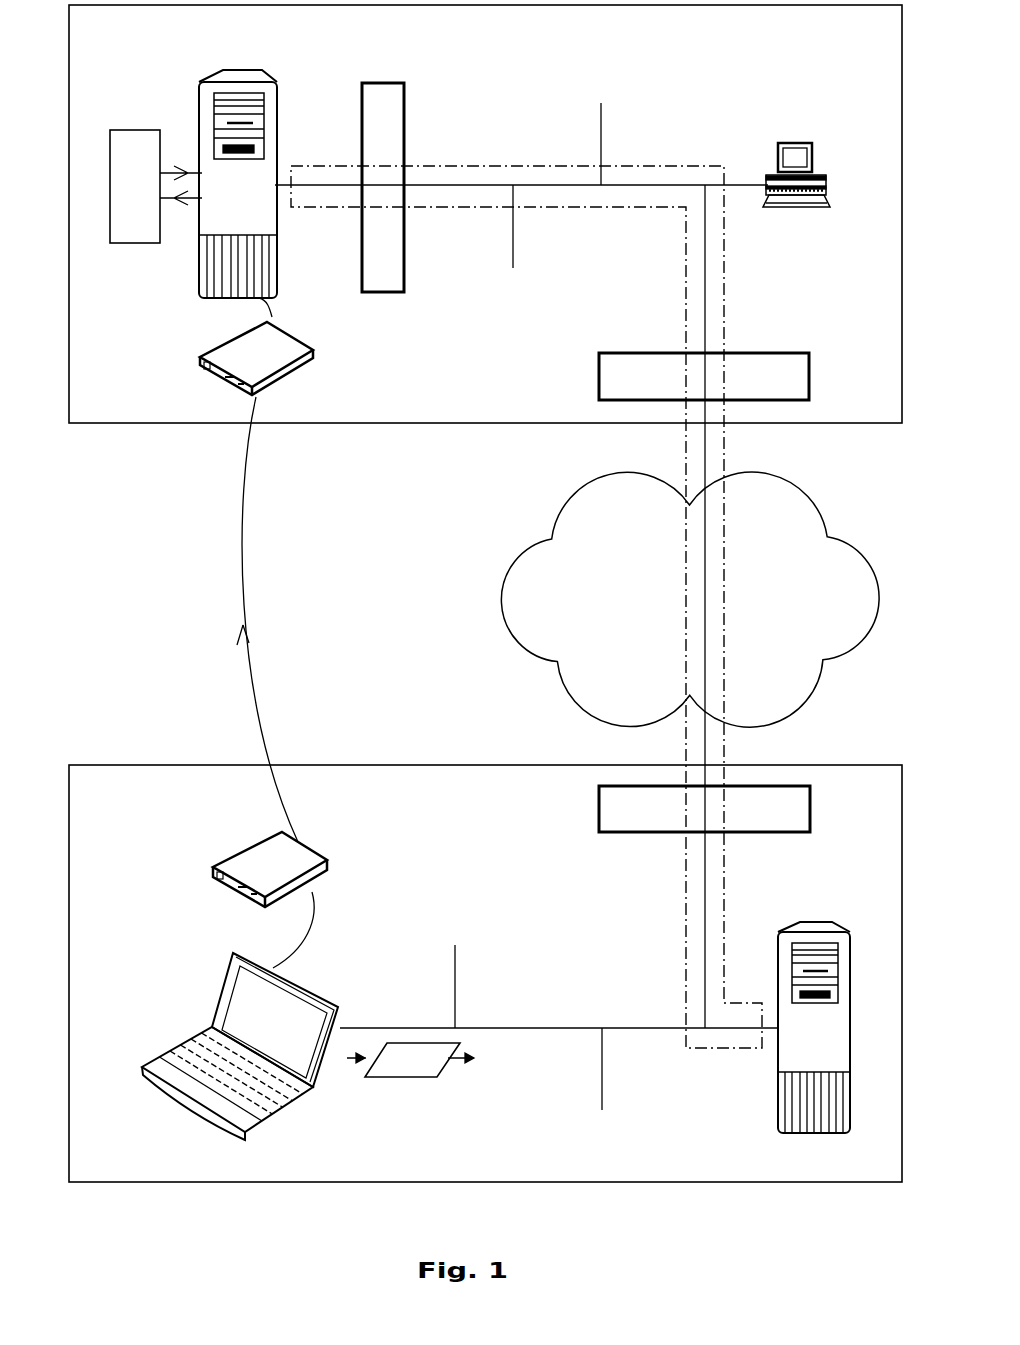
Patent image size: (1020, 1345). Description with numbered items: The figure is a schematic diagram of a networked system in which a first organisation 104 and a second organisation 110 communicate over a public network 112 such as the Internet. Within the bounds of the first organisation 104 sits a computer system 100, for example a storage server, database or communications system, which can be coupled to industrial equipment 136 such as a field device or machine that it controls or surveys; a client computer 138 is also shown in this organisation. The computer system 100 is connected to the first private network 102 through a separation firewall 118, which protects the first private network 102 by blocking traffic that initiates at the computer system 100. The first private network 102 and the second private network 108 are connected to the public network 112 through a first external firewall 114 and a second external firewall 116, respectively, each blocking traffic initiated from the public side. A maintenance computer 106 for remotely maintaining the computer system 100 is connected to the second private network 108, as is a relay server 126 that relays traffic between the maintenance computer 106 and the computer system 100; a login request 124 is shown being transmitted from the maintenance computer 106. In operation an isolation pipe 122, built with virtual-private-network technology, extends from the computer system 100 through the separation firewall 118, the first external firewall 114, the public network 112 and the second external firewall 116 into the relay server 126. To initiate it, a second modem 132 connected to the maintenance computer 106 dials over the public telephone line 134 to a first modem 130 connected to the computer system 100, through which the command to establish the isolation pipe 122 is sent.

The computer system 100 is at (232, 70).
The first private network 102 is at (601, 135).
The first organisation 104 is at (483, 423).
The maintenance computer 106 is at (192, 1048).
The second private network 108 is at (455, 985).
The second organisation 110 is at (456, 765).
The public network 112 is at (500, 600).
The first external firewall 114 is at (810, 372).
The second external firewall 116 is at (811, 800).
The separation firewall 118 is at (382, 292).
The isolation pipe 122 is at (724, 628).
The login request 124 is at (400, 1078).
The relay server 126 is at (778, 1125).
The first modem 130 is at (316, 355).
The second modem 132 is at (314, 847).
The public telephone line 134 is at (243, 545).
The industrial equipment 136 is at (122, 130).
The client computer 138 is at (808, 143).